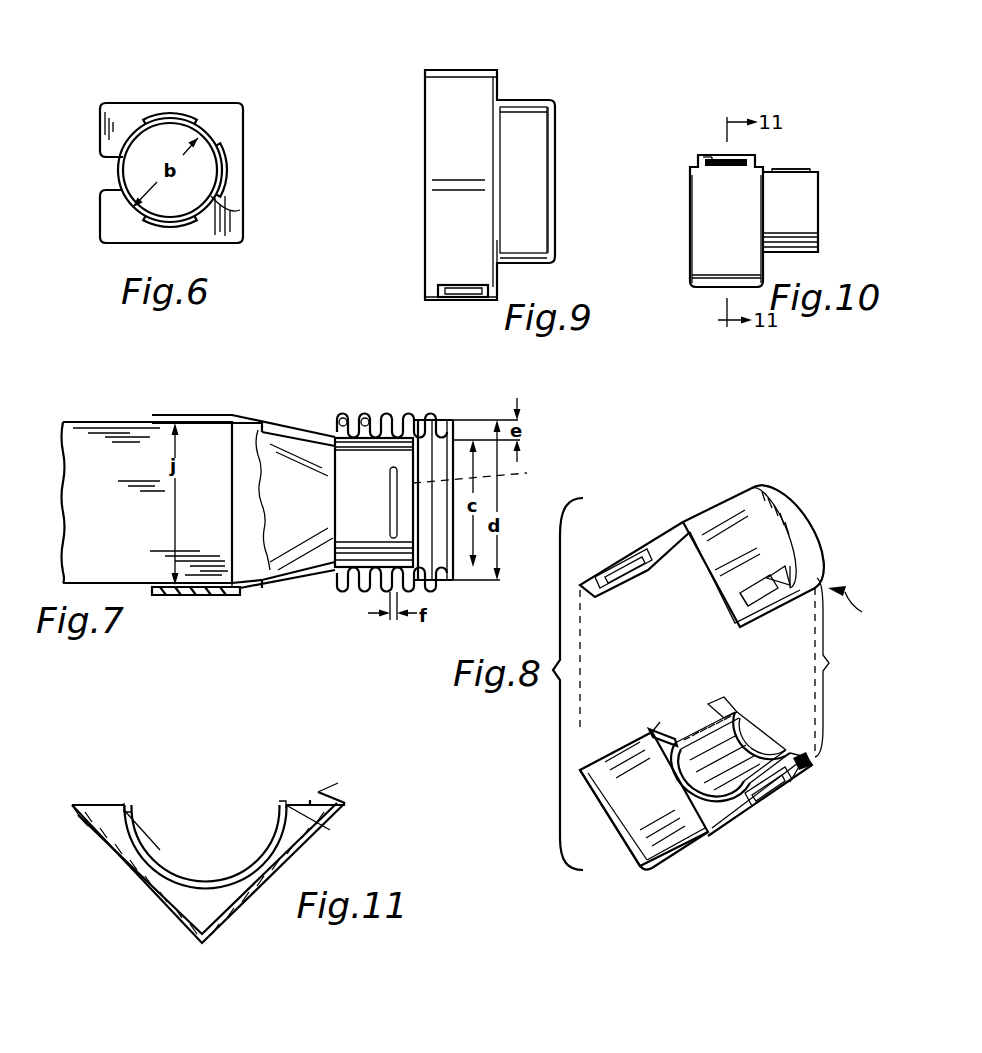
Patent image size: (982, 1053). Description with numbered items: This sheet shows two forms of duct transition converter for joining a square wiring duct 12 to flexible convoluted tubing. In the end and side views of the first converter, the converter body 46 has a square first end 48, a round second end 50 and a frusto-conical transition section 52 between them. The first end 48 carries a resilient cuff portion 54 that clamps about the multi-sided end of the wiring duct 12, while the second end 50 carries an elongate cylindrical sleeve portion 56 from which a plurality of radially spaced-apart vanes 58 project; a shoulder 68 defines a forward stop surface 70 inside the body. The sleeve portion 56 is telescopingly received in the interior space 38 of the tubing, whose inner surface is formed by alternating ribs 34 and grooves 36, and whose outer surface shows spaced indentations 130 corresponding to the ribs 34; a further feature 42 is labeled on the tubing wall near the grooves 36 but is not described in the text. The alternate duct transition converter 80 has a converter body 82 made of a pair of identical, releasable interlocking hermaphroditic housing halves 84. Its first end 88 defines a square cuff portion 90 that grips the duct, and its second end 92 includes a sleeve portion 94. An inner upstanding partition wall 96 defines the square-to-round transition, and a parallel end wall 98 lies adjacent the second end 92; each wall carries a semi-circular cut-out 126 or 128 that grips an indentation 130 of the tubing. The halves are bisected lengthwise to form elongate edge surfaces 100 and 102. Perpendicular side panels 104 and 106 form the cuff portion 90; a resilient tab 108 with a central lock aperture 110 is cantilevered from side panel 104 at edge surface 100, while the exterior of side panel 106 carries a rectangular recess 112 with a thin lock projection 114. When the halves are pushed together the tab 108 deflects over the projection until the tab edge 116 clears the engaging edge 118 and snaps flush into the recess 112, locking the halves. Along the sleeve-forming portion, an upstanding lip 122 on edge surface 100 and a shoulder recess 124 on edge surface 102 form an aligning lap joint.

In FIG. 7, the wiring duct 12 is at (147, 502).
In FIG. 7, the ribs 34 is at (383, 590).
In FIG. 7, the grooves 36 is at (346, 414).
In FIG. 7, the interior space 38 is at (484, 475).
In FIG. 7, the ridge 42 is at (360, 408).
In FIG. 7, the converter body 46 is at (300, 430).
In FIG. 7, the first end 48 is at (152, 415).
In FIG. 6, the second end 50 is at (234, 182).
In FIG. 7, the second end 50 is at (413, 483).
In FIG. 6, the transition section 52 is at (167, 173).
In FIG. 7, the transition section 52 is at (302, 430).
In FIG. 7, the cuff portion 54 is at (198, 595).
In FIG. 6, the sleeve portion 56 is at (205, 210).
In FIG. 7, the sleeve portion 56 is at (374, 502).
In FIG. 6, the vanes 58 is at (170, 118).
In FIG. 7, the vanes 58 is at (391, 510).
In FIG. 7, the shoulder 68 is at (240, 590).
In FIG. 7, the forward stop surface 70 is at (238, 592).
In FIG. 8, the duct transition converter 80 is at (859, 606).
In FIG. 8, the converter body 82 is at (840, 667).
In FIG. 9, the hermaphroditic housing half 84 is at (483, 70).
In FIG. 10, the hermaphroditic housing half 84 is at (716, 265).
In FIG. 8, the hermaphroditic housing half 84 is at (752, 490).
In FIG. 9, the first end 88 is at (425, 70).
In FIG. 10, the first end 88 is at (690, 281).
In FIG. 8, the first end 88 is at (612, 825).
In FIG. 10, the cuff portion 90 is at (705, 197).
In FIG. 8, the cuff portion 90 is at (625, 745).
In FIG. 10, the second end 92 is at (818, 237).
In FIG. 8, the second end 92 is at (728, 697).
In FIG. 9, the sleeve portion 94 is at (532, 100).
In FIG. 10, the sleeve portion 94 is at (805, 213).
In FIG. 8, the sleeve portion 94 is at (755, 523).
In FIG. 9, the partition wall 96 is at (500, 95).
In FIG. 8, the partition wall 96 is at (668, 532).
In FIG. 11, the partition wall 96 is at (208, 873).
In FIG. 9, the end wall 98 is at (556, 112).
In FIG. 8, the end wall 98 is at (703, 720).
In FIG. 9, the elongate edge surface 100 is at (505, 266).
In FIG. 10, the elongate edge surface 100 is at (697, 165).
In FIG. 8, the elongate edge surface 100 is at (707, 838).
In FIG. 11, the elongate edge surface 100 is at (310, 800).
In FIG. 9, the elongate edge surface 102 is at (498, 82).
In FIG. 8, the elongate edge surface 102 is at (660, 737).
In FIG. 11, the elongate edge surface 102 is at (115, 805).
In FIG. 9, the side panel 104 is at (490, 300).
In FIG. 10, the side panel 104 is at (726, 221).
In FIG. 8, the side panel 104 is at (628, 557).
In FIG. 11, the side panel 104 is at (300, 838).
In FIG. 9, the side panel 106 is at (445, 70).
In FIG. 8, the side panel 106 is at (790, 530).
In FIG. 11, the side panel 106 is at (150, 885).
In FIG. 10, the resilient tab 108 is at (703, 157).
In FIG. 8, the resilient tab 108 is at (613, 597).
In FIG. 11, the resilient tab 108 is at (342, 782).
In FIG. 10, the lock aperture 110 is at (712, 157).
In FIG. 8, the lock aperture 110 is at (632, 573).
In FIG. 11, the lock aperture 110 is at (352, 778).
In FIG. 8, the rectangular recess 112 is at (778, 580).
In FIG. 11, the rectangular recess 112 is at (88, 840).
In FIG. 8, the lock projection 114 is at (800, 590).
In FIG. 11, the lock projection 114 is at (75, 812).
In FIG. 10, the tab edge 116 is at (742, 160).
In FIG. 8, the tab edge 116 is at (770, 805).
In FIG. 8, the engaging edge 118 is at (785, 562).
In FIG. 9, the upstanding lip 122 is at (552, 264).
In FIG. 10, the upstanding lip 122 is at (806, 169).
In FIG. 8, the upstanding lip 122 is at (663, 737).
In FIG. 11, the upstanding lip 122 is at (278, 802).
In FIG. 9, the shoulder recess 124 is at (555, 104).
In FIG. 11, the shoulder recess 124 is at (126, 805).
In FIG. 9, the cut-out 126 is at (495, 240).
In FIG. 8, the cut-out 126 is at (677, 557).
In FIG. 11, the cut-out 126 is at (270, 845).
In FIG. 9, the cut-out 128 is at (556, 248).
In FIG. 8, the cut-out 128 is at (770, 750).
In FIG. 7, the indentations 130 is at (435, 418).